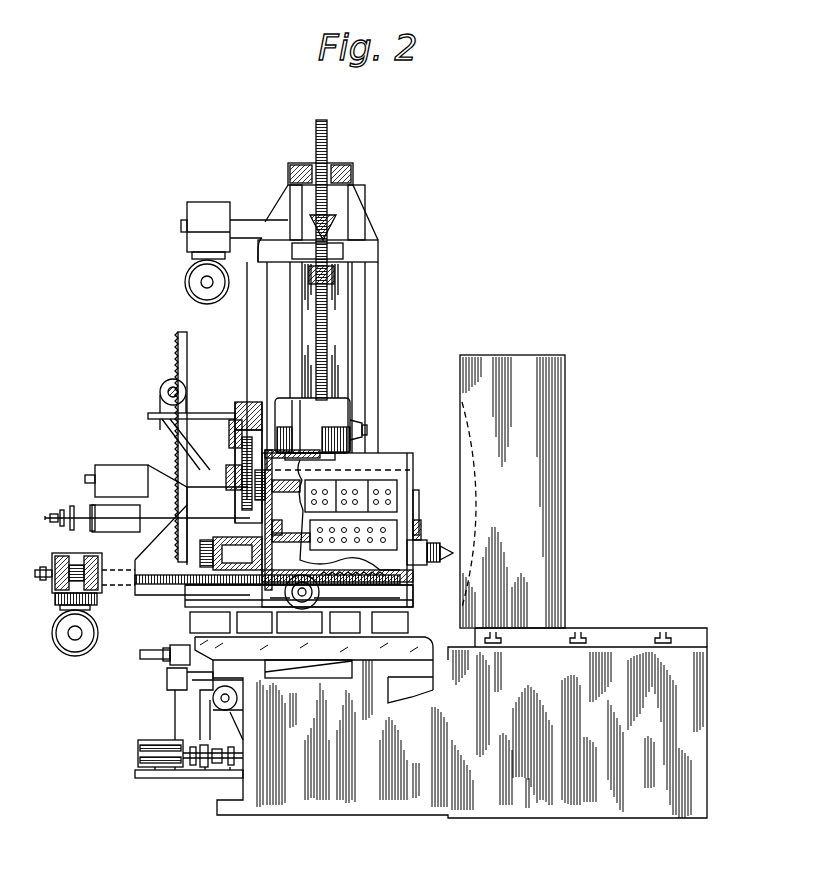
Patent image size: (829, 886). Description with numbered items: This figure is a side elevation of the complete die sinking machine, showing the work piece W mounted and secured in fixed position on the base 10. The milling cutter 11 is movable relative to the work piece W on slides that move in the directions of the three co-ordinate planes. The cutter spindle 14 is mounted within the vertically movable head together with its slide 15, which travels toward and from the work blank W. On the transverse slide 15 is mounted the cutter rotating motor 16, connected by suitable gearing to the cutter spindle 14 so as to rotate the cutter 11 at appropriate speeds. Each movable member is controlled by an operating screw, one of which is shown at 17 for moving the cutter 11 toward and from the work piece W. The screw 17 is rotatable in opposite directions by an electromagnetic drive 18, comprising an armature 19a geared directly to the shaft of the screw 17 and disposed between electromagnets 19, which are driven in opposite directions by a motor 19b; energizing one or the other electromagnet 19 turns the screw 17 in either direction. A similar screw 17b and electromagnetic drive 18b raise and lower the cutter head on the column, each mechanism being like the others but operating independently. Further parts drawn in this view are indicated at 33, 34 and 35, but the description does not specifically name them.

The base 10 is at (432, 813).
The milling cutter 11 is at (445, 543).
The cutter spindle 14 is at (200, 600).
The slide 15 is at (388, 468).
The cutter rotating motor 16 is at (345, 415).
The operating screw 17 is at (178, 577).
The screw 17b is at (327, 318).
The electromagnetic drive 18 is at (56, 603).
The electromagnetic drive 18b is at (198, 243).
The electromagnets 19 is at (52, 560).
The armature 19a is at (78, 560).
The motor 19b is at (63, 650).
The drive motor 33 is at (140, 745).
The adjusting knob 34 is at (160, 385).
The roller 35 is at (330, 600).
The work piece W is at (550, 526).